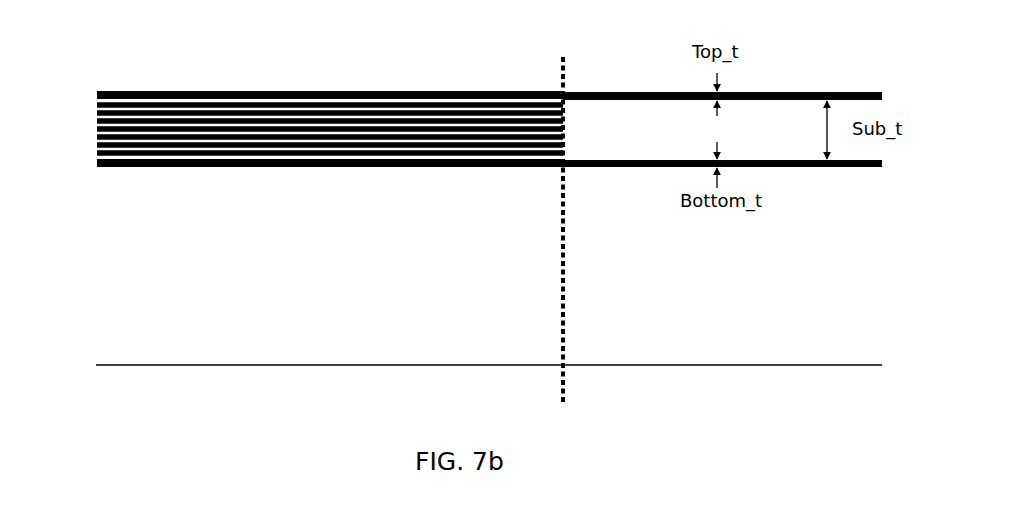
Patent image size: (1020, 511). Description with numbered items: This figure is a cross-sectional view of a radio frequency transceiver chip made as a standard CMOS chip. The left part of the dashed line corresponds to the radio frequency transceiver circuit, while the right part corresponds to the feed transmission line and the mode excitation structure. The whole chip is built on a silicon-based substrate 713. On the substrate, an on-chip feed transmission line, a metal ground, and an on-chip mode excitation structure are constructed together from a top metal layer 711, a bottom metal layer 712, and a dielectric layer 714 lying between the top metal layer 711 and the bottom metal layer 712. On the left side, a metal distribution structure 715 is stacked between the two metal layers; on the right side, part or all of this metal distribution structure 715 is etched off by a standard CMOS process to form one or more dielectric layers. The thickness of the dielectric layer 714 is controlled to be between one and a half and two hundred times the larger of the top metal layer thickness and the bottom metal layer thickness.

The top metal layer 711 is at (95, 93).
The metal distribution structure 715 is at (95, 128).
The bottom metal layer 712 is at (95, 164).
The silicon-based substrate 713 is at (489, 346).
The dielectric layer 714 is at (629, 130).